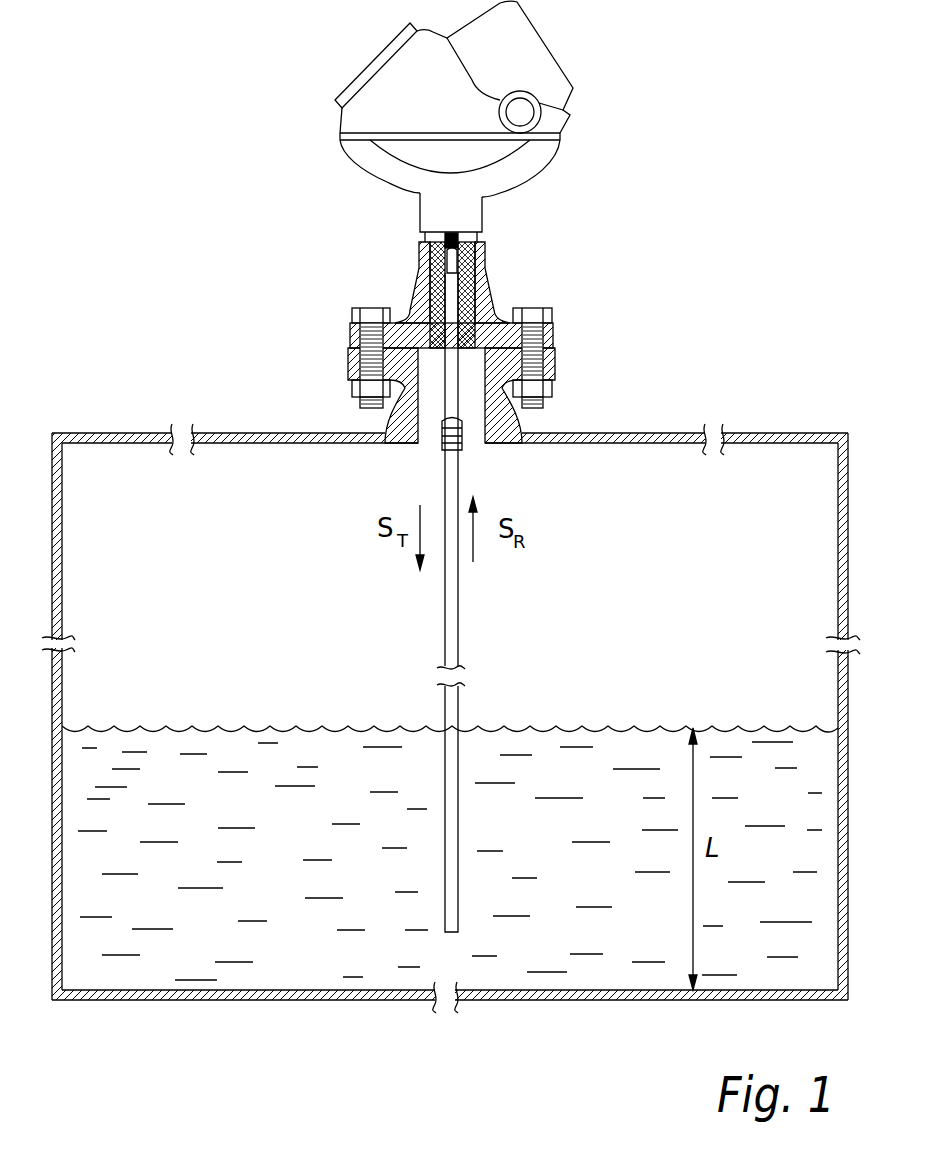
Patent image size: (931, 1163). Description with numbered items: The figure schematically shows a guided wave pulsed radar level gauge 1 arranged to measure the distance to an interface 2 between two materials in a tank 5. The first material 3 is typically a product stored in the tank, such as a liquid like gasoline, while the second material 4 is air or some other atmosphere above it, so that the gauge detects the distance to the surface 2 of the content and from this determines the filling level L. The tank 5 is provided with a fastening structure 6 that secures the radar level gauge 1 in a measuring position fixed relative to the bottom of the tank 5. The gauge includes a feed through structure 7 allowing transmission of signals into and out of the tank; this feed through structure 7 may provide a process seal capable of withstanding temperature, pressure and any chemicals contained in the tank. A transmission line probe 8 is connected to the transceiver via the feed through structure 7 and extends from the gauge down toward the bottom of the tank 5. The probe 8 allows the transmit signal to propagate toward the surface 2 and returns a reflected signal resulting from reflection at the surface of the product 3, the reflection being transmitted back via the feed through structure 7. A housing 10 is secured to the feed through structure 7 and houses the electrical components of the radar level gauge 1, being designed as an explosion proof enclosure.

The guided wave pulsed radar level gauge 1 is at (290, 113).
The interface 2 is at (197, 727).
The first material 3 is at (283, 876).
The second material 4 is at (290, 585).
The tank 5 is at (627, 433).
The fastening structure 6 is at (517, 433).
The feed through structure 7 is at (495, 302).
The transmission line probe 8 is at (453, 597).
The housing 10 is at (375, 173).